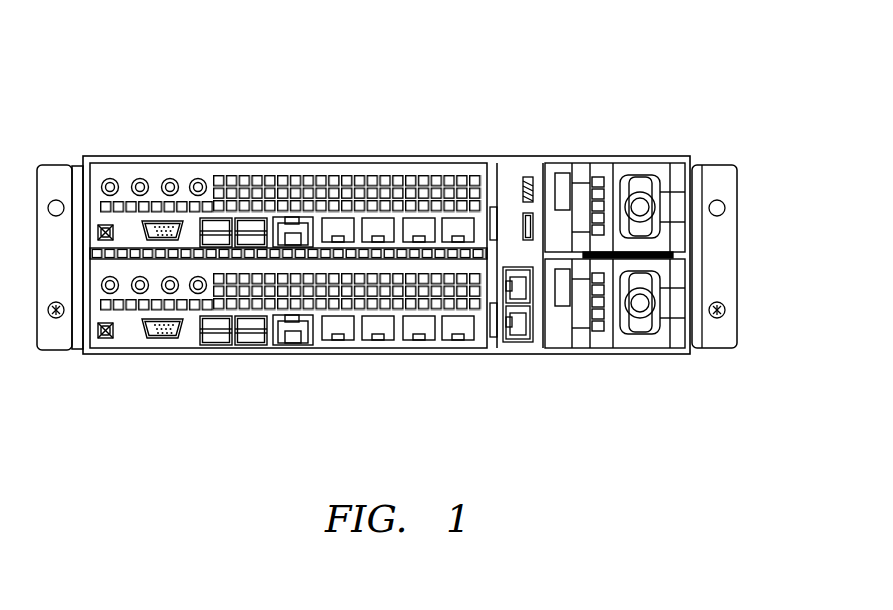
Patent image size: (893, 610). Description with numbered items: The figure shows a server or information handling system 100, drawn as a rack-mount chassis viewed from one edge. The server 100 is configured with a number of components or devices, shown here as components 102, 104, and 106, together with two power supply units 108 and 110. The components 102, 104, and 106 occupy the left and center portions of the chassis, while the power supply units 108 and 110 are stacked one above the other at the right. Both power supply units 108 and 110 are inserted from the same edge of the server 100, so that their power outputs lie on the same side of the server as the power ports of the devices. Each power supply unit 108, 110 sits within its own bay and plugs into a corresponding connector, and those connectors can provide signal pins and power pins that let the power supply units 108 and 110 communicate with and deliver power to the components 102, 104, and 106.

The information handling system 100 is at (694, 50).
The component 102 is at (180, 168).
The component 104 is at (312, 345).
The component 106 is at (512, 178).
The power supply unit 108 is at (640, 172).
The power supply unit 110 is at (628, 345).